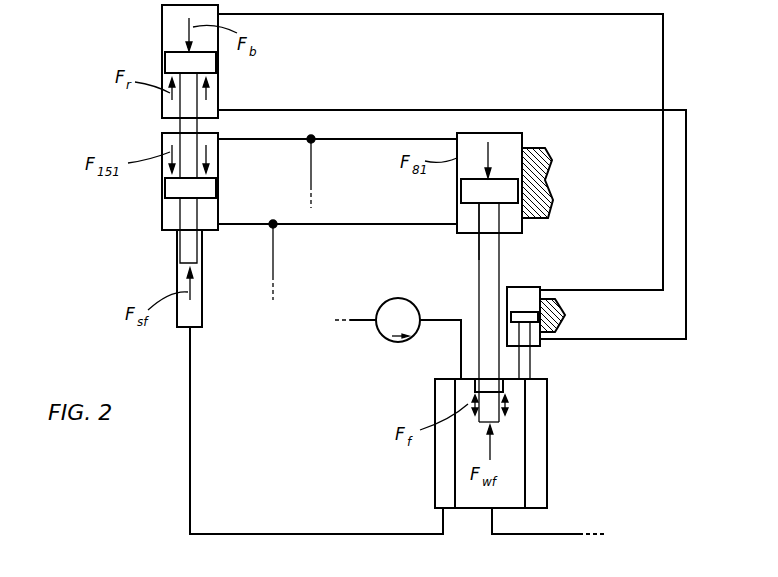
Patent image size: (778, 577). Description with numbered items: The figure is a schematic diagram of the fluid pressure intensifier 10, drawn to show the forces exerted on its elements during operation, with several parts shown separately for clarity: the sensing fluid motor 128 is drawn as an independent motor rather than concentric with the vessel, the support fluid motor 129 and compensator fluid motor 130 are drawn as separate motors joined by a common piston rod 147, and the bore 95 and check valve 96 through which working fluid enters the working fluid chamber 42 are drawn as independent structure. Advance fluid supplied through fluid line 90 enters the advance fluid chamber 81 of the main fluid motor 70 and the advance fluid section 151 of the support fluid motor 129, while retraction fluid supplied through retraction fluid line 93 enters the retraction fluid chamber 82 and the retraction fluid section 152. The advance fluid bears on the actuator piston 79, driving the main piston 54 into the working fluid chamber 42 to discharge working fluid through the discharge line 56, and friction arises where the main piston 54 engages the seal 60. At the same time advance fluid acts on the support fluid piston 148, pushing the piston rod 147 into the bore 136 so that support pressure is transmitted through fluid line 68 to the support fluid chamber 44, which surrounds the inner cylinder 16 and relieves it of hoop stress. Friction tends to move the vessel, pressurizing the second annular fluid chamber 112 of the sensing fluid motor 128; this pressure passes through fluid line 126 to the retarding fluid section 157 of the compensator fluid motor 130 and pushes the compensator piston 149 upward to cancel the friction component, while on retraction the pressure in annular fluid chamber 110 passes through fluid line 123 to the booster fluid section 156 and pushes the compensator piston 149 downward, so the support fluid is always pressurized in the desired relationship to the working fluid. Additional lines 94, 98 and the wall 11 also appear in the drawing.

The fluid pressure intensifier 10 is at (575, 402).
The wheel/rotor surface 11 is at (565, 317).
The inner cylinder 16 is at (455, 456).
The working fluid chamber 42 is at (512, 442).
The support fluid chamber 44 is at (537, 469).
The main piston 54 is at (481, 278).
The discharge line 56 is at (562, 532).
The seal 60 is at (470, 384).
The fluid line 68 is at (193, 468).
The main fluid motor 70 is at (457, 172).
The actuator piston 79 is at (472, 203).
The advance fluid chamber 81 is at (508, 143).
The retraction fluid chamber 82 is at (512, 226).
The fluid line 90 is at (337, 142).
The retraction fluid line 93 is at (318, 226).
The branch line 94 is at (313, 182).
The bore 95 is at (460, 345).
The check valve 96 is at (388, 336).
The branch line 98 is at (272, 257).
The annular fluid chamber 110 is at (525, 295).
The second annular fluid chamber 112 is at (537, 344).
The fluid line 123 is at (427, 17).
The fluid line 126 is at (408, 108).
The sensing fluid motor 128 is at (558, 278).
The support fluid motor 129 is at (128, 203).
The compensator fluid motor 130 is at (120, 47).
The bore 136 is at (197, 320).
The piston rod 147 is at (188, 245).
The support fluid piston 148 is at (212, 188).
The compensator piston 149 is at (212, 68).
The advance fluid section 151 is at (165, 137).
The retraction fluid section 152 is at (168, 224).
The booster fluid section 156 is at (163, 18).
The retarding fluid section 157 is at (164, 110).